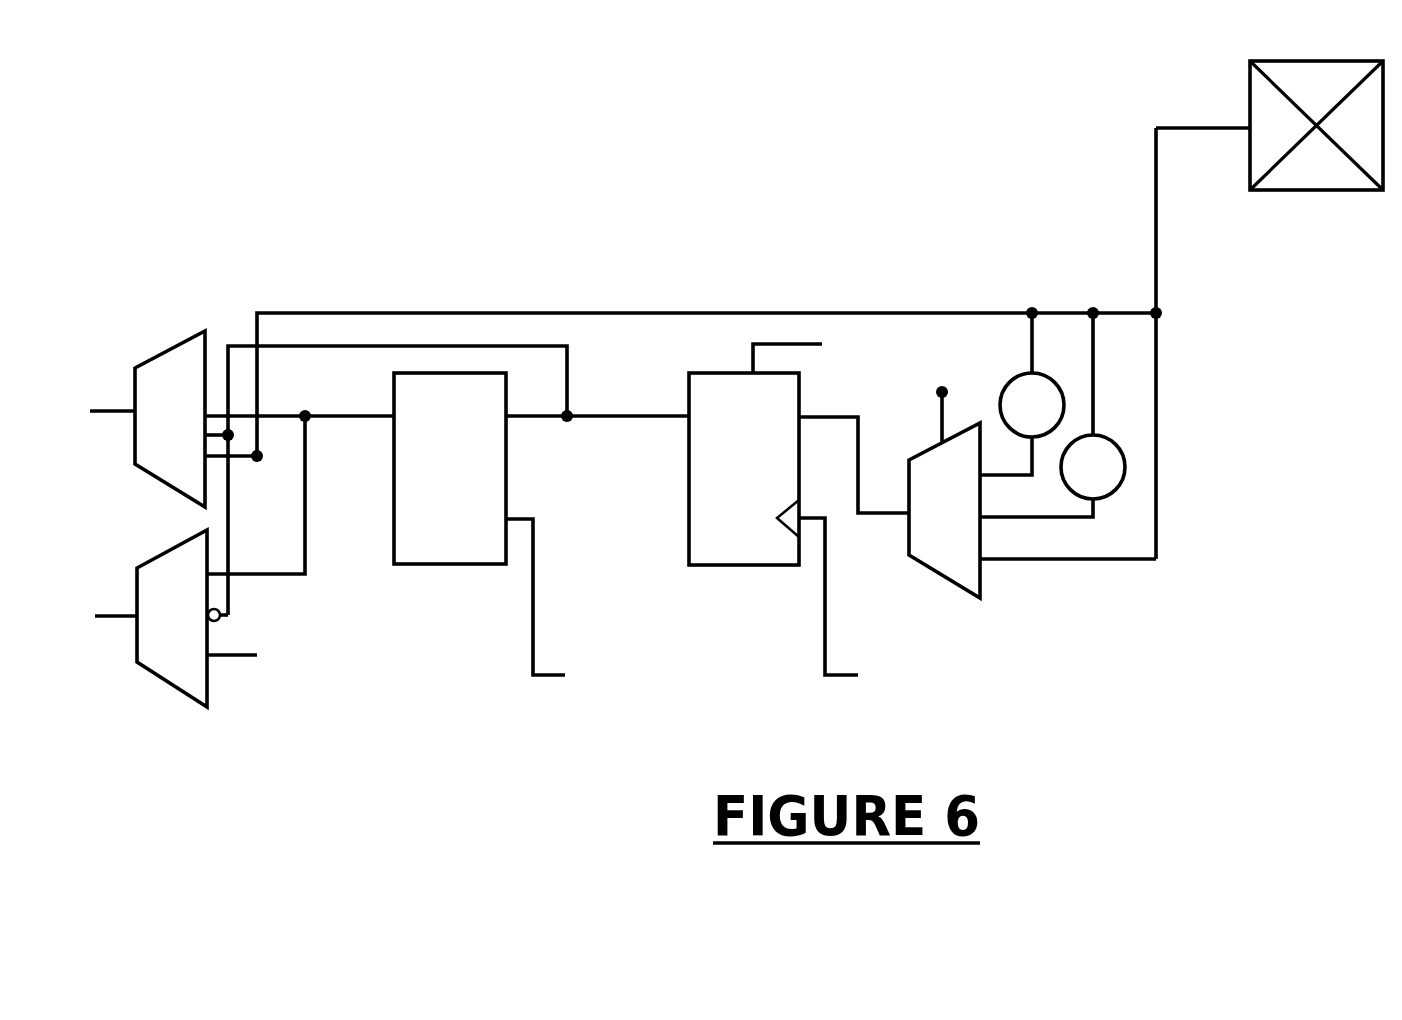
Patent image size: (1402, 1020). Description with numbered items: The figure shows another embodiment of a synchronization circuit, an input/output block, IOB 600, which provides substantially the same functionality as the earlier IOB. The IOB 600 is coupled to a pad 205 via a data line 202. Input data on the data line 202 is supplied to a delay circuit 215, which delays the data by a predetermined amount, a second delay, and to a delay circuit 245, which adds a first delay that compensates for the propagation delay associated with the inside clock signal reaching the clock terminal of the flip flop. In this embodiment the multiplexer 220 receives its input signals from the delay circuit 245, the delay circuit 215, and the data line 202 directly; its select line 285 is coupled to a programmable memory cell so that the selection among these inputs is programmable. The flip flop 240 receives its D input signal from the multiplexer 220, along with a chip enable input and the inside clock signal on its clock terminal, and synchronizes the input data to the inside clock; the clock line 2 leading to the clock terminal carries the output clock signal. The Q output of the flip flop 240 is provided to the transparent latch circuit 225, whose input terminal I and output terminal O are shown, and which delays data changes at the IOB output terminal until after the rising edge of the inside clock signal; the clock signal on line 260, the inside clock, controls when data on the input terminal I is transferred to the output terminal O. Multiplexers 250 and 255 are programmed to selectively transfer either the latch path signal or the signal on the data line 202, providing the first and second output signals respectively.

The IOB 600 is at (644, 194).
The data line 202 is at (1155, 232).
The pad 205 is at (1307, 178).
The multiplexer 250 is at (186, 330).
The multiplexer 255 is at (207, 690).
The transparent latch circuit 225 is at (477, 493).
The clock line 260 is at (533, 622).
The flip flop 240 is at (772, 493).
The output clock line OK 2 is at (825, 630).
The multiplexer 220 is at (965, 523).
The select line 285 is at (940, 412).
The delay circuit 215 is at (1018, 378).
The delay circuit 245 is at (1098, 432).